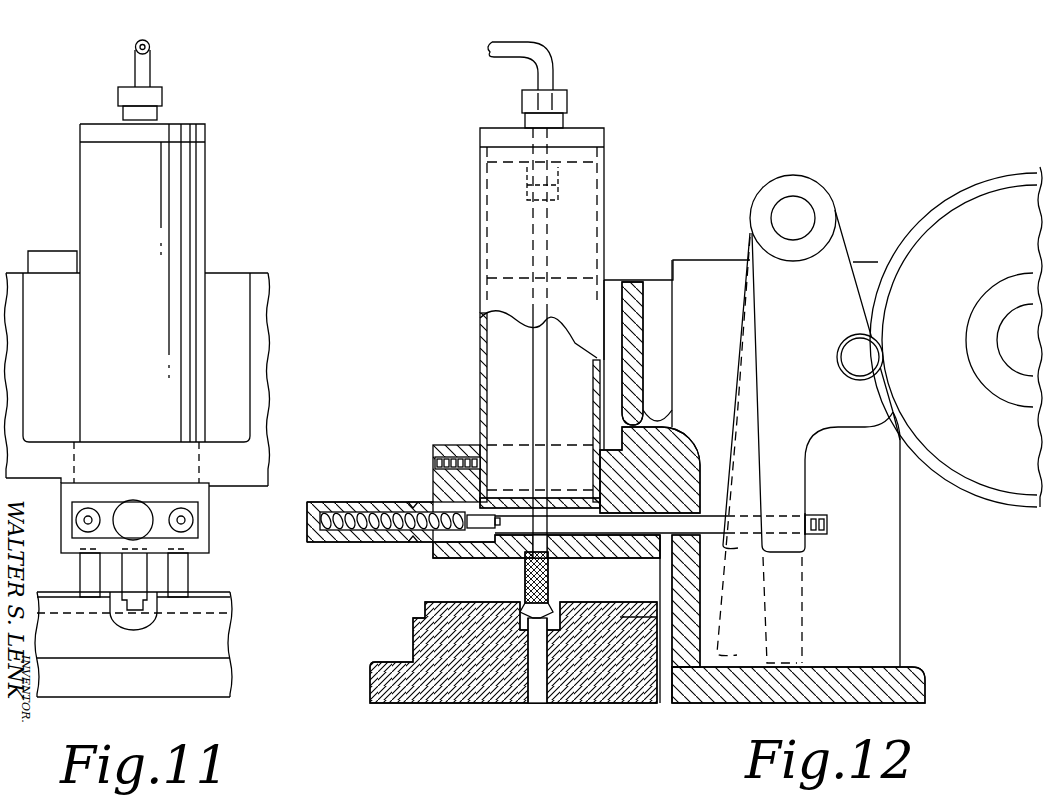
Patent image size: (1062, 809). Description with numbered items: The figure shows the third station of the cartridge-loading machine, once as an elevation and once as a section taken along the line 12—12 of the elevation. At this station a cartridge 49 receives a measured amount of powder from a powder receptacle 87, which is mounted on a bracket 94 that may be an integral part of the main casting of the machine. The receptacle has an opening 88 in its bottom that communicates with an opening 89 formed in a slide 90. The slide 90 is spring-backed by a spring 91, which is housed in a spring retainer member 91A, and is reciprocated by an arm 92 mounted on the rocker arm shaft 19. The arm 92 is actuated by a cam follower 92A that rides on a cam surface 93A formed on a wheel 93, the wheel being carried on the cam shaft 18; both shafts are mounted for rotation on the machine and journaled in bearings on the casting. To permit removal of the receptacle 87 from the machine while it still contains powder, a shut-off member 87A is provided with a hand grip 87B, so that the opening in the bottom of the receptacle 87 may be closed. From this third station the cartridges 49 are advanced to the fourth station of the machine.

In FIG. 11, the section line 12— 12 is at (142, 44).
In FIG. 12, the cam shaft 18 is at (1013, 333).
In FIG. 12, the rocker arm shaft 19 is at (783, 208).
In FIG. 11, the cartridge 49 is at (135, 580).
In FIG. 12, the cartridge 49 is at (550, 578).
In FIG. 11, the powder receptacle 87 is at (205, 178).
In FIG. 12, the powder receptacle 87 is at (480, 337).
In FIG. 12, the shut-off member 87A is at (545, 373).
In FIG. 11, the hand grip 87B is at (146, 73).
In FIG. 12, the hand grip 87B is at (538, 58).
In FIG. 12, the opening 88 is at (490, 503).
In FIG. 12, the opening 89 is at (578, 525).
In FIG. 12, the slide 90 is at (637, 527).
In FIG. 12, the spring 91 is at (372, 513).
In FIG. 11, the spring retainer member 91A is at (128, 507).
In FIG. 12, the spring retainer member 91A is at (327, 543).
In FIG. 12, the arm 92 is at (803, 622).
In FIG. 12, the cam follower 92A is at (844, 376).
In FIG. 12, the wheel 93 is at (990, 213).
In FIG. 12, the cam surface 93A is at (903, 425).
In FIG. 11, the bracket 94 is at (270, 340).
In FIG. 12, the bracket 94 is at (637, 326).